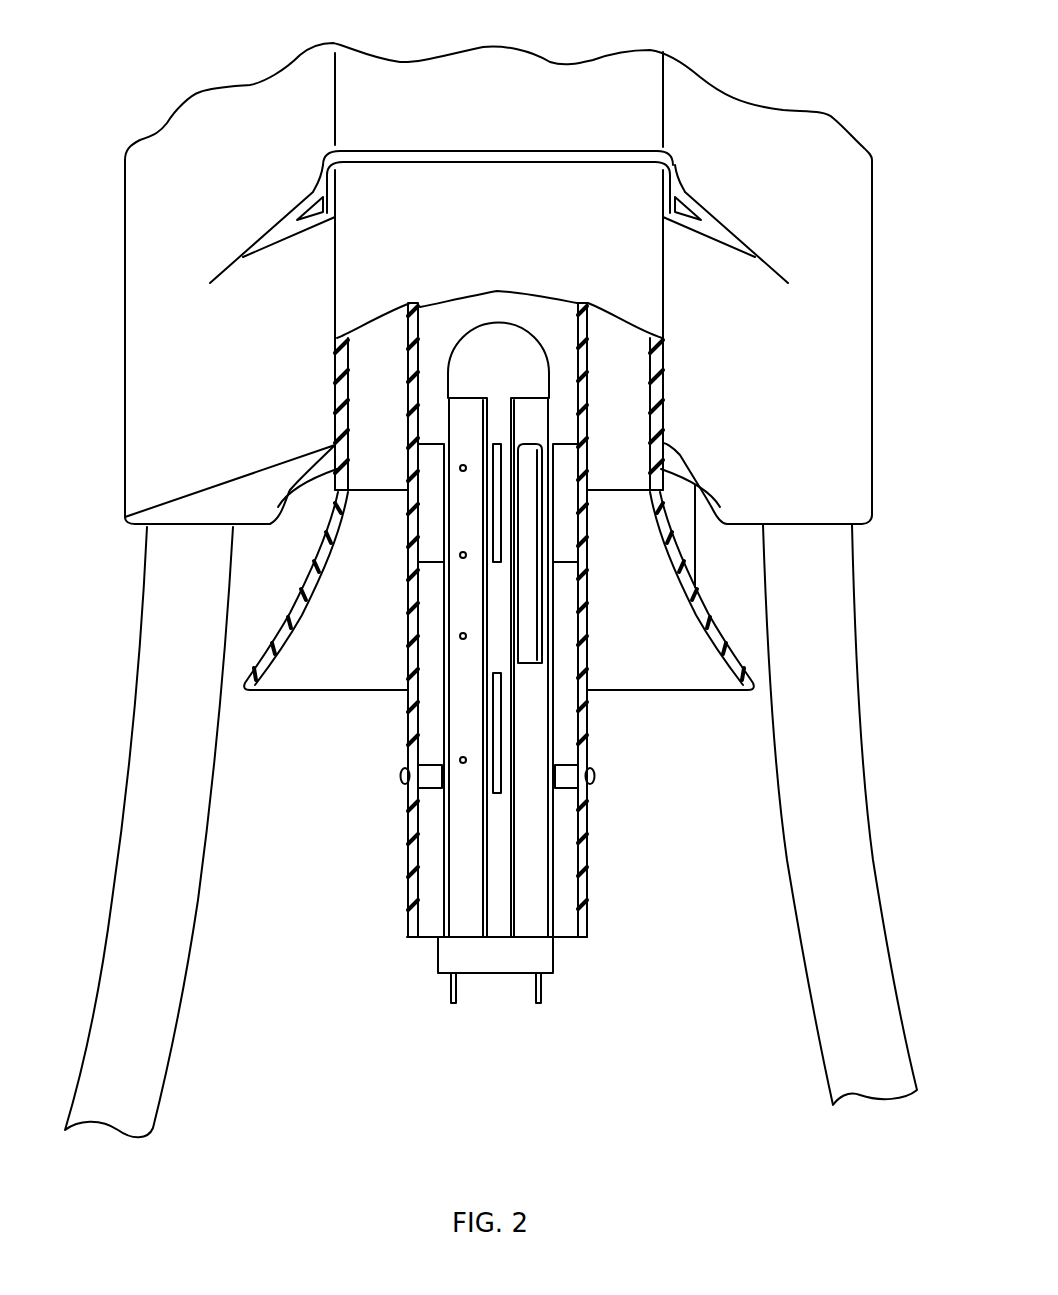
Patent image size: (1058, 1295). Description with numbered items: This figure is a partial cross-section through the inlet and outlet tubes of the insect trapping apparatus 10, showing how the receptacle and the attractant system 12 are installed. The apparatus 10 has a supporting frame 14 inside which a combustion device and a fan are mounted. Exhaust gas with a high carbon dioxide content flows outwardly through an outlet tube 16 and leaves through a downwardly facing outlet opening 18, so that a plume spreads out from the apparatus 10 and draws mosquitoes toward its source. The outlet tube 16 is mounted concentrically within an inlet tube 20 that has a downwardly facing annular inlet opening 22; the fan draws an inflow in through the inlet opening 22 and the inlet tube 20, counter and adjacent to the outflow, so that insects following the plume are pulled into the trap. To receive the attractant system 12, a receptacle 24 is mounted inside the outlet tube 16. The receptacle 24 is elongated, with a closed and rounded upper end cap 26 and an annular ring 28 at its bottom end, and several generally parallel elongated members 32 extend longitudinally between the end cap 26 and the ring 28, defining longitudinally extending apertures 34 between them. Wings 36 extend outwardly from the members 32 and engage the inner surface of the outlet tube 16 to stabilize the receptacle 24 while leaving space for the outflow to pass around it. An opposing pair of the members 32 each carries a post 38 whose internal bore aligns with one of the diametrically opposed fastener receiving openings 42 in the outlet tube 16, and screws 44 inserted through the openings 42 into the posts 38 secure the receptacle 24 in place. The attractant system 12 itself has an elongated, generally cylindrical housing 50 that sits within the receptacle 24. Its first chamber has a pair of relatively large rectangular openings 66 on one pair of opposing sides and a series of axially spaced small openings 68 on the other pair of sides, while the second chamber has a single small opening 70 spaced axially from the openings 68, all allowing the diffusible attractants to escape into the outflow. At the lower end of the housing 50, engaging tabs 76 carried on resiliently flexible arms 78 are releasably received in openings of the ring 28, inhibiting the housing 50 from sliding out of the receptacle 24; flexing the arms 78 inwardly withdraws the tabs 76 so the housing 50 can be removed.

The insect trapping apparatus 10 is at (841, 94).
The attractant system 12 is at (697, 722).
The supporting frame 14 is at (862, 183).
The outlet tube 16 is at (413, 887).
The outlet opening 18 is at (426, 932).
The inlet tube 20 is at (300, 613).
The inlet opening 22 is at (307, 693).
The receptacle 24 is at (547, 888).
The upper end cap 26 is at (507, 337).
The annular ring 28 is at (499, 967).
The elongated members 32 is at (553, 688).
The apertures 34 is at (455, 608).
The wings 36 is at (432, 462).
The post 38 is at (412, 808).
The fastener receiving openings 42 is at (410, 773).
The screws 44 is at (400, 779).
The housing 50 is at (537, 418).
The rectangular openings 66 is at (530, 540).
The small openings 68 is at (458, 472).
The opening 70 is at (458, 757).
The engaging tabs 76 is at (435, 956).
The resiliently flexible arms 78 is at (450, 993).